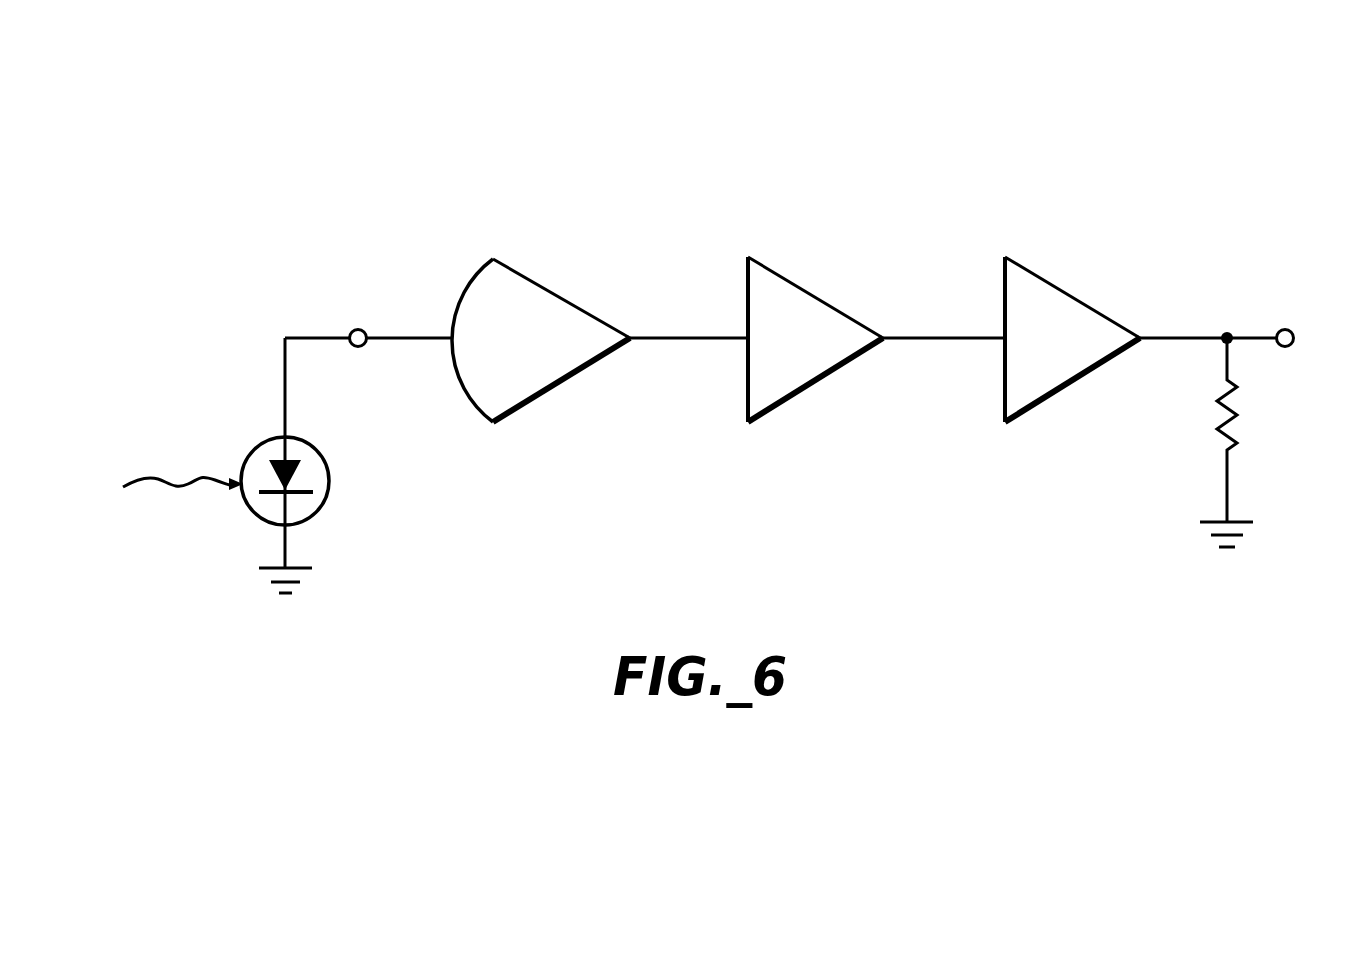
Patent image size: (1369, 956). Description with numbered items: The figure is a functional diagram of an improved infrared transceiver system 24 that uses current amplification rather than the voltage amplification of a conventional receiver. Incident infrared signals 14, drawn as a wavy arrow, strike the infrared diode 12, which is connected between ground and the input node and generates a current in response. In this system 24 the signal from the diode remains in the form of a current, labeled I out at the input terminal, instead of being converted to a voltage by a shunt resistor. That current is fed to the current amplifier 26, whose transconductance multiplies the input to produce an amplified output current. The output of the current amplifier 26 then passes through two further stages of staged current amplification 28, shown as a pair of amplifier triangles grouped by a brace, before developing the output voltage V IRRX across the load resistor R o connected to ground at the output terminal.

The infrared diode 12 is at (265, 442).
The infrared signals 14 is at (155, 478).
The improved infrared transceiver system 24 is at (1030, 129).
The current amplifier 26 is at (478, 272).
The staged current amplification 28 is at (1160, 442).